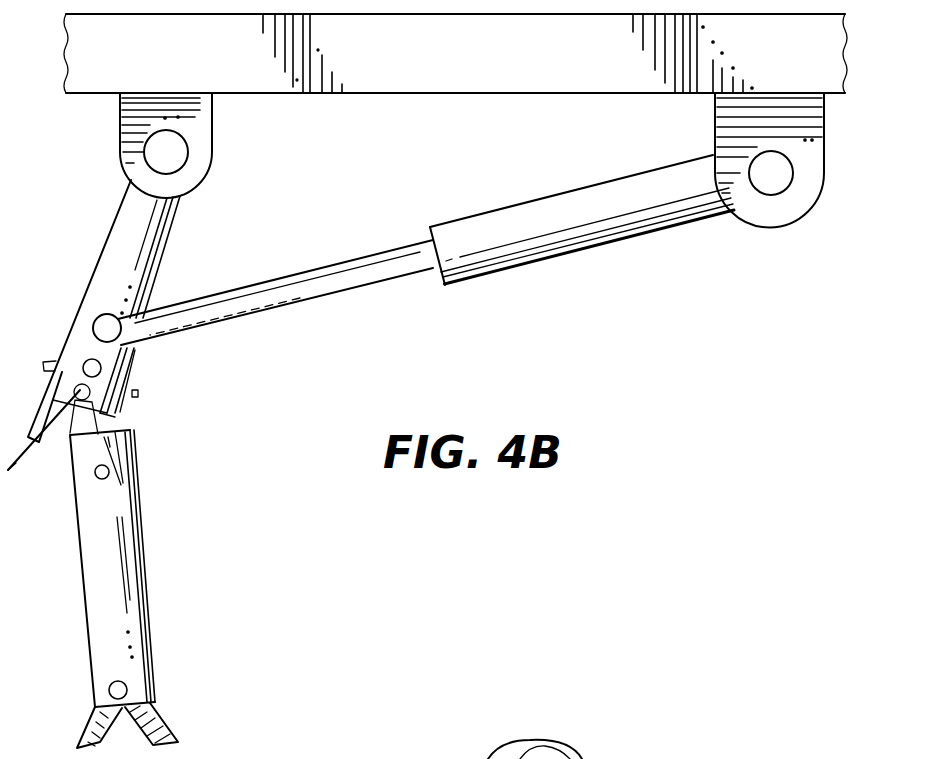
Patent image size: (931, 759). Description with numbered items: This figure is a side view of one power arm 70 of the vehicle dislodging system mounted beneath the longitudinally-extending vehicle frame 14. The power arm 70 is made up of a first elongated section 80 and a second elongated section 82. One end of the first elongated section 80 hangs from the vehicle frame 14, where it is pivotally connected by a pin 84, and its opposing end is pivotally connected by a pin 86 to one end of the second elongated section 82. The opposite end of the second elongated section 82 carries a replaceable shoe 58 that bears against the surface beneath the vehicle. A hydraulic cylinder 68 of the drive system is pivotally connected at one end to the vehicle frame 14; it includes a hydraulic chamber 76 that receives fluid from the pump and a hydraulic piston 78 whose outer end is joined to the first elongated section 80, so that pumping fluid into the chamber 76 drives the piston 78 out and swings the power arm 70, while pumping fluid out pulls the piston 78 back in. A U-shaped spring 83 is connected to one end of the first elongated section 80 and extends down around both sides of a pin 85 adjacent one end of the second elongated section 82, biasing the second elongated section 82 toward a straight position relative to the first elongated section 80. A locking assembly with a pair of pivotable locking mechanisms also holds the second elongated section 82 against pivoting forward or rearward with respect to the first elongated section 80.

The vehicle frame 14 is at (392, 70).
The pin 84 is at (211, 133).
The hydraulic chamber 76 is at (462, 213).
The hydraulic cylinder 68 is at (463, 288).
The hydraulic piston 78 is at (328, 264).
The power arm 70 is at (110, 248).
The first elongated section 80 is at (173, 243).
The pin 86 is at (101, 368).
The spring 83 is at (43, 450).
The second elongated section 82 is at (147, 593).
The pin 85 is at (102, 480).
The replaceable shoe 58 is at (160, 718).